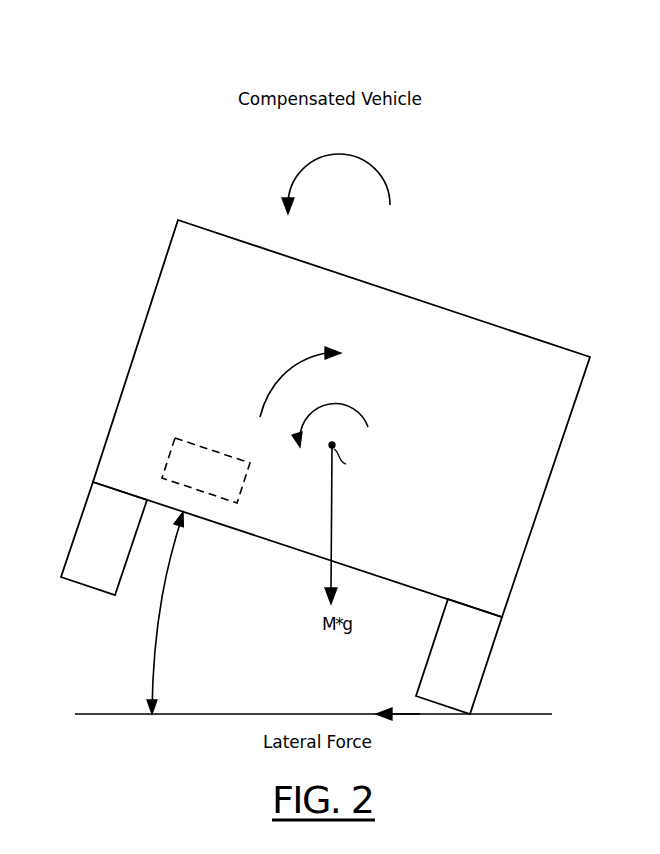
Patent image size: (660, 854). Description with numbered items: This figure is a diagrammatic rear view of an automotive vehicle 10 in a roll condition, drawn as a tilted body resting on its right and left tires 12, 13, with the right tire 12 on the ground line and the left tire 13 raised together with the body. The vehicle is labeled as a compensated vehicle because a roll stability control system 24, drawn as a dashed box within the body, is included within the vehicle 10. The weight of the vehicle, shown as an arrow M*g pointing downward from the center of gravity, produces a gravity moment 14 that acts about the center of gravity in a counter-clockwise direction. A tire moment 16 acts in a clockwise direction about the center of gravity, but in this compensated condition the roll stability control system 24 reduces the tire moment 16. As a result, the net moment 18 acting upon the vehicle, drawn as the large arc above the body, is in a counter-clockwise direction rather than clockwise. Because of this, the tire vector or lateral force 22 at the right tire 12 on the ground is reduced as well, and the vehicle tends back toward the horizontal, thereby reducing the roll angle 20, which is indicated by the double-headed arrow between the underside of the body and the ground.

The automotive vehicle 10 is at (412, 295).
The right tire 12 is at (490, 668).
The left tire 13 is at (92, 593).
The gravity moment 14 is at (368, 427).
The tire moment 16 is at (305, 350).
The net moment 18 is at (386, 190).
The roll angle 20 is at (157, 630).
The lateral force 22 is at (418, 713).
The roll stability control system 24 is at (207, 448).